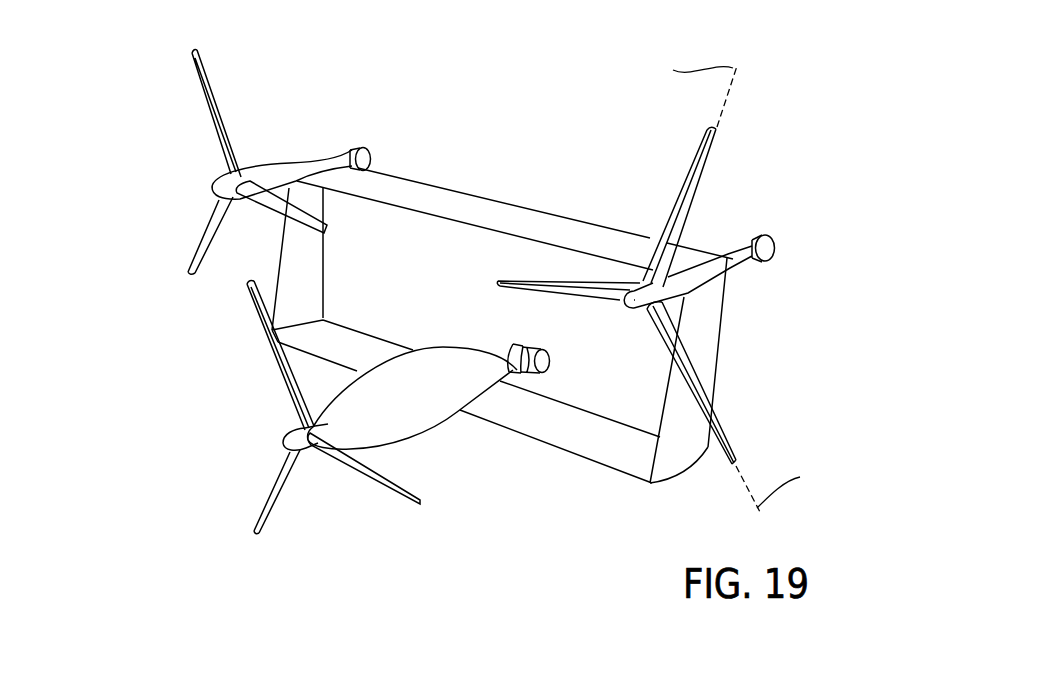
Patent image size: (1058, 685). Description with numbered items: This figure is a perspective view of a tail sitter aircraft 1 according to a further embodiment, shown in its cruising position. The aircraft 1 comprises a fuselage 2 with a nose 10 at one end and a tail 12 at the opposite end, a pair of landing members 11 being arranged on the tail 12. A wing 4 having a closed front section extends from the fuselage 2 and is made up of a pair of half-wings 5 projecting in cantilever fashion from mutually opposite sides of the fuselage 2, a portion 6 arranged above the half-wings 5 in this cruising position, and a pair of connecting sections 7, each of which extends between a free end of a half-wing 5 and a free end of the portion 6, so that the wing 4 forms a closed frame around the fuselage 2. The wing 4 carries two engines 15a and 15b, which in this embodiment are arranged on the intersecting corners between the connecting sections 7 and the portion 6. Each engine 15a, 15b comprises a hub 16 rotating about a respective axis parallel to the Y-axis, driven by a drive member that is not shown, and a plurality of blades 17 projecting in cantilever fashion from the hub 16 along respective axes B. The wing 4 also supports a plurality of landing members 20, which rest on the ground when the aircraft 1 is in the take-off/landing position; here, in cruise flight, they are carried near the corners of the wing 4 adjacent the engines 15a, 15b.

The aircraft 1 is at (116, 58).
The fuselage 2 is at (417, 398).
The wing 4 is at (517, 166).
The half-wings 5 is at (376, 343).
The portion 6 is at (447, 196).
The connecting sections 7 is at (318, 268).
The nose 10 is at (328, 428).
The landing members 11 is at (522, 345).
The tail 12 is at (503, 366).
The engine 15a is at (262, 107).
The engine 15b is at (768, 406).
The hub 16 is at (222, 182).
The blades 17 is at (200, 96).
The landing members 20 is at (358, 148).